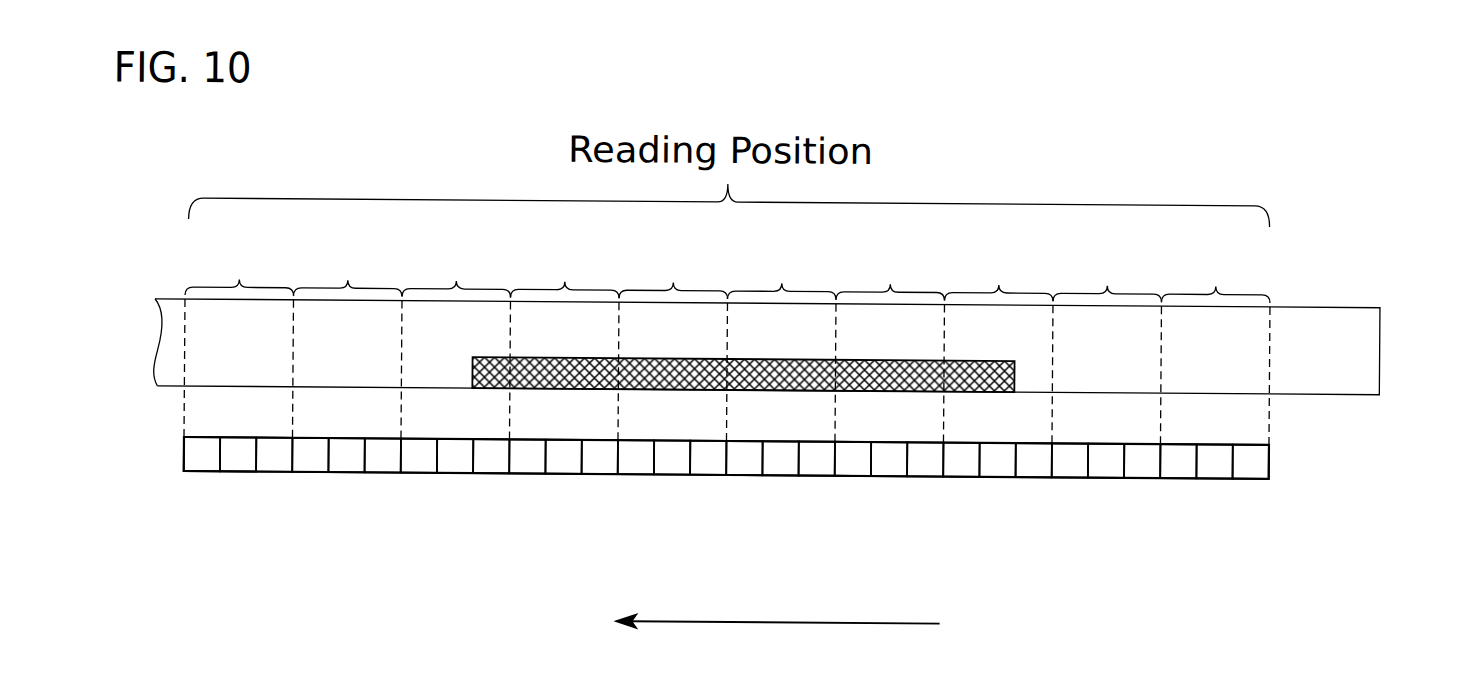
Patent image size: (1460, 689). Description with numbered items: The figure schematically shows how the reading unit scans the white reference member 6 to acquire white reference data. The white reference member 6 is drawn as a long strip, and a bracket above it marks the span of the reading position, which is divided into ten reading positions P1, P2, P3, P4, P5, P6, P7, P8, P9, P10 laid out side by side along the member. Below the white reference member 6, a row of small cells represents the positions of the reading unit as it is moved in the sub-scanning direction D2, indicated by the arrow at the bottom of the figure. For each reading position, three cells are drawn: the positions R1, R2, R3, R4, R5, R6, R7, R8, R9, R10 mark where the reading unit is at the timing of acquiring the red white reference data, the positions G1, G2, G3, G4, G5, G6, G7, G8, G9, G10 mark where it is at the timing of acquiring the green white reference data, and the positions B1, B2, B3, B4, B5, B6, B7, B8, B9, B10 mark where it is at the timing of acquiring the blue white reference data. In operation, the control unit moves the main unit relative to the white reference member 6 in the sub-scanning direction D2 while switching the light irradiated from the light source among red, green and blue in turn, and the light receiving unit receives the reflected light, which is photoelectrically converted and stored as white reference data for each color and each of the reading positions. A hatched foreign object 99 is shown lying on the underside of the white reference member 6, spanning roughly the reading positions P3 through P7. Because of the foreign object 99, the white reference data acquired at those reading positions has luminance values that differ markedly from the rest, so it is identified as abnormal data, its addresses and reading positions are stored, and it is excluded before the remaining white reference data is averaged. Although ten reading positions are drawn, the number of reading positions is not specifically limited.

The white reference member 6 is at (1368, 343).
The foreign object 99 is at (921, 361).
The reading position P1 is at (1216, 278).
The reading position P2 is at (1107, 277).
The reading position P3 is at (999, 277).
The reading position P4 is at (890, 276).
The reading position P5 is at (782, 275).
The reading position P6 is at (673, 274).
The reading position P7 is at (565, 273).
The reading position P8 is at (456, 273).
The reading position P9 is at (348, 272).
The reading position P10 is at (239, 271).
The reading unit position for blue white reference data B1 is at (1182, 460).
The reading unit position for blue white reference data B2 is at (1074, 460).
The reading unit position for blue white reference data B3 is at (966, 460).
The reading unit position for blue white reference data B4 is at (857, 460).
The reading unit position for blue white reference data B5 is at (748, 460).
The reading unit position for blue white reference data B6 is at (640, 460).
The reading unit position for blue white reference data B7 is at (532, 460).
The reading unit position for blue white reference data B8 is at (423, 460).
The reading unit position for blue white reference data B9 is at (314, 460).
The reading unit position for blue white reference data B10 is at (206, 460).
The reading unit position for green white reference data G1 is at (1210, 460).
The reading unit position for green white reference data G2 is at (1101, 460).
The reading unit position for green white reference data G3 is at (993, 460).
The reading unit position for green white reference data G4 is at (884, 460).
The reading unit position for green white reference data G5 is at (776, 460).
The reading unit position for green white reference data G6 is at (667, 460).
The reading unit position for green white reference data G7 is at (559, 460).
The reading unit position for green white reference data G8 is at (450, 460).
The reading unit position for green white reference data G9 is at (342, 460).
The reading unit position for green white reference data G10 is at (233, 460).
The reading unit position for red white reference data R1 is at (1245, 460).
The reading unit position for red white reference data R2 is at (1136, 460).
The reading unit position for red white reference data R3 is at (1028, 460).
The reading unit position for red white reference data R4 is at (919, 460).
The reading unit position for red white reference data R5 is at (811, 460).
The reading unit position for red white reference data R6 is at (702, 460).
The reading unit position for red white reference data R7 is at (594, 460).
The reading unit position for red white reference data R8 is at (485, 460).
The reading unit position for red white reference data R9 is at (377, 460).
The reading unit position for red white reference data R10 is at (268, 460).
The sub-scanning direction D2 is at (777, 638).